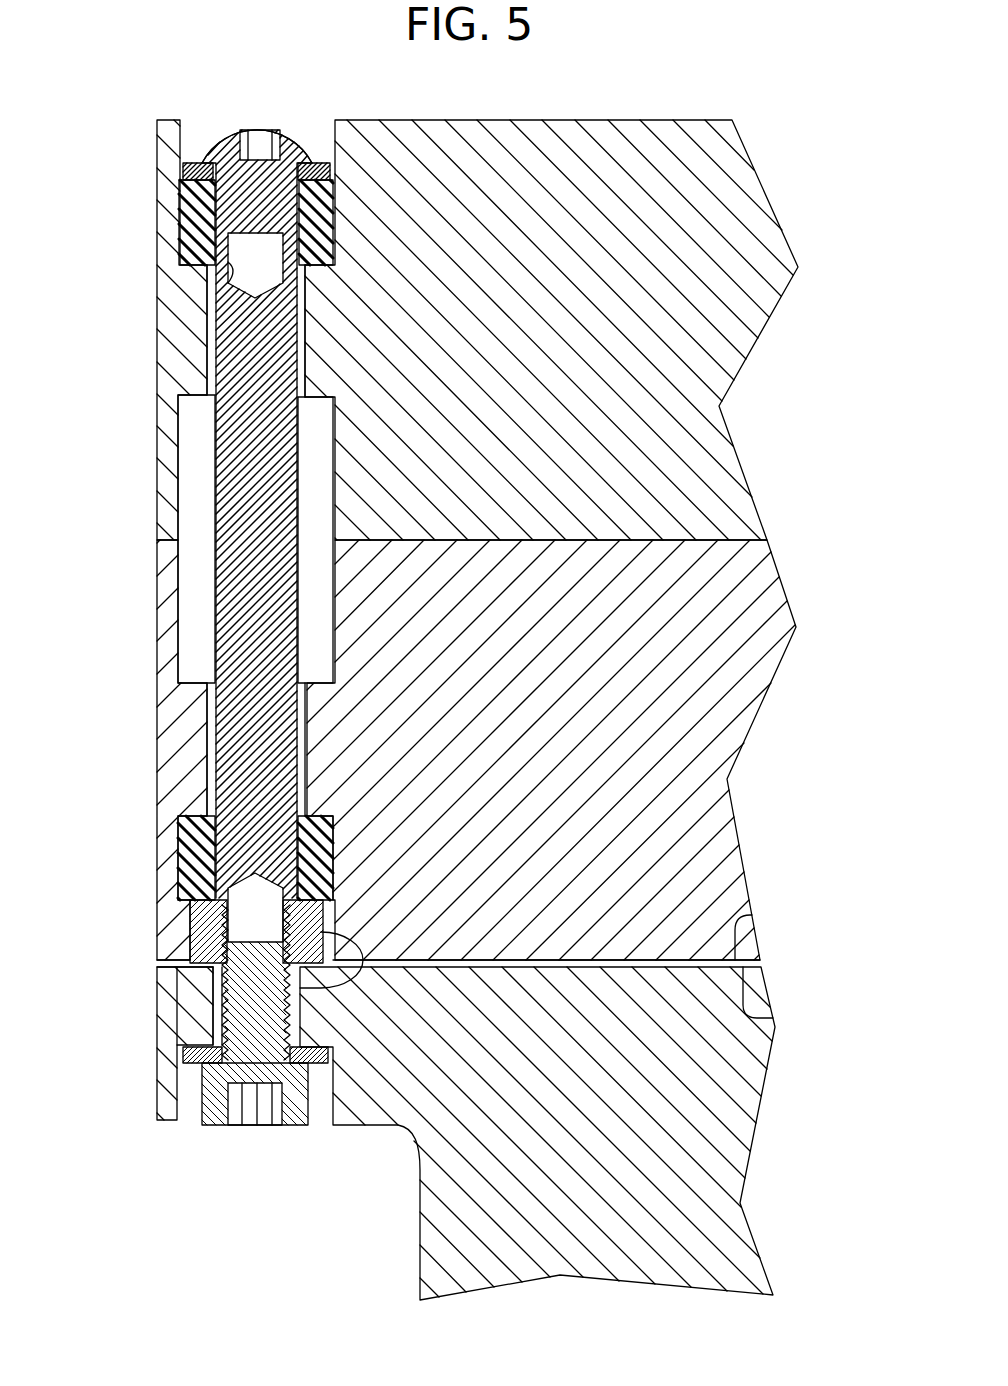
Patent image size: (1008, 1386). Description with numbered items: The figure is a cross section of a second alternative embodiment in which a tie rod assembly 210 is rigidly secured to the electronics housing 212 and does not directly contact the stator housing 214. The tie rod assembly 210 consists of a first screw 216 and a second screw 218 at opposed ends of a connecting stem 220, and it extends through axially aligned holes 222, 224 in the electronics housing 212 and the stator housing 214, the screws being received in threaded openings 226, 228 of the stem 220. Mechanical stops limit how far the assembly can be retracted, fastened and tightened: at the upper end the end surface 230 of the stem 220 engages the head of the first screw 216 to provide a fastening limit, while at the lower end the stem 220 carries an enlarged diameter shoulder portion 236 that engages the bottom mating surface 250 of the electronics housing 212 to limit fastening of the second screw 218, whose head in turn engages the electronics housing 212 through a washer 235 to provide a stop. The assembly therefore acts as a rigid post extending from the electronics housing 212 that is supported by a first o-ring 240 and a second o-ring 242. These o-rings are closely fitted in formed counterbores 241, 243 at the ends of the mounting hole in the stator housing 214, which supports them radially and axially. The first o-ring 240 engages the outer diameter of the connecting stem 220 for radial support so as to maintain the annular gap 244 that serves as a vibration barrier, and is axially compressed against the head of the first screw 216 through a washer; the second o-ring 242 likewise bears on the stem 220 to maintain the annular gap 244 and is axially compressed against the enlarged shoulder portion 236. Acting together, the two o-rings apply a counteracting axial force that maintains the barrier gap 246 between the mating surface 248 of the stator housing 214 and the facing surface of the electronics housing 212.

The tie rod assembly 210 is at (200, 605).
The electronics housing 212 is at (755, 1053).
The stator housing 214 is at (748, 315).
The first screw 216 is at (295, 152).
The second screw 218 is at (210, 1110).
The connecting stem 220 is at (235, 483).
The hole 222 is at (212, 352).
The hole 224 is at (198, 163).
The cavity 226 is at (228, 270).
The socket 228 is at (230, 905).
The end surface 230 is at (300, 163).
The washer 235 is at (318, 1063).
The enlarged diameter shoulder portion 236 is at (225, 950).
The first o-ring 240 is at (192, 228).
The counterbore 241 is at (190, 131).
The second o-ring 242 is at (192, 850).
The counterbore 243 is at (225, 990).
The annular gap 244 is at (210, 775).
The barrier gap 246 is at (767, 965).
The mating surface 248 is at (735, 937).
The bottom mating surface 250 is at (757, 1018).